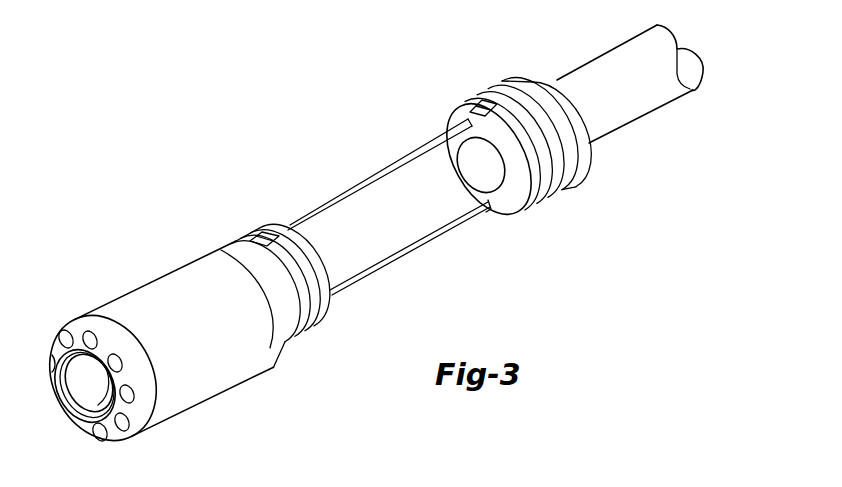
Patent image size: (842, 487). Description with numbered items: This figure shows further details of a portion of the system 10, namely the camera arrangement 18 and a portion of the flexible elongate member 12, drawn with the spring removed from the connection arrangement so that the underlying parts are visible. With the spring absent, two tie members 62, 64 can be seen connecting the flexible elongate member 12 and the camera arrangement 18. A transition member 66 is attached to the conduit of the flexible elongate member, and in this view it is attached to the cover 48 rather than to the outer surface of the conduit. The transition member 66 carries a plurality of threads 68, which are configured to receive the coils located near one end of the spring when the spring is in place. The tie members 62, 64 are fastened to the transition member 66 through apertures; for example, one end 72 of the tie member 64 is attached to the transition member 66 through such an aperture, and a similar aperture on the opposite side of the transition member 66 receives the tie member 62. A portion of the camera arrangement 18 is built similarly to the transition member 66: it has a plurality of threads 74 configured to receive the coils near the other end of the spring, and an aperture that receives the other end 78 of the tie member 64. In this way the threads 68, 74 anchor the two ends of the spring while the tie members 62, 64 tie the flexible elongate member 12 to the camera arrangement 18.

The system 10 is at (144, 483).
The flexible elongate member 12 is at (652, 113).
The camera arrangement 18 is at (137, 283).
The cover 48 is at (600, 58).
The tie member 62 is at (353, 190).
The tie member 64 is at (403, 253).
The transition member 66 is at (587, 173).
The threads 68 is at (474, 108).
The end of the tie member 72 is at (490, 212).
The threads 74 is at (257, 237).
The other end of the tie member 78 is at (330, 300).